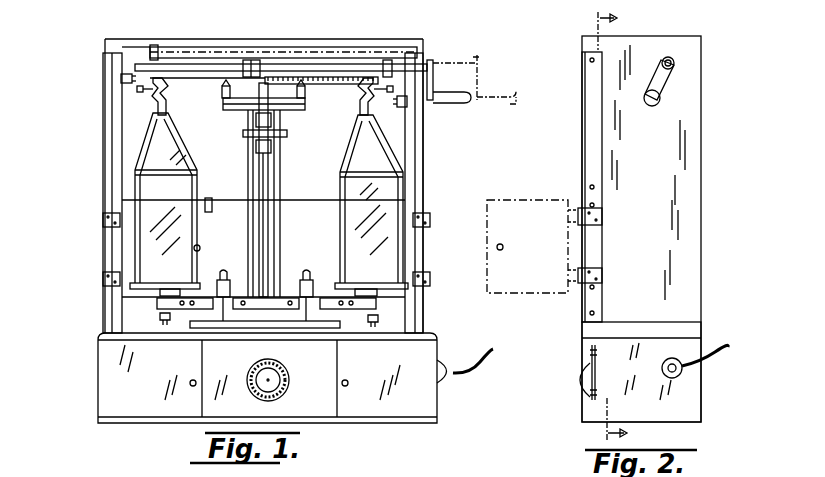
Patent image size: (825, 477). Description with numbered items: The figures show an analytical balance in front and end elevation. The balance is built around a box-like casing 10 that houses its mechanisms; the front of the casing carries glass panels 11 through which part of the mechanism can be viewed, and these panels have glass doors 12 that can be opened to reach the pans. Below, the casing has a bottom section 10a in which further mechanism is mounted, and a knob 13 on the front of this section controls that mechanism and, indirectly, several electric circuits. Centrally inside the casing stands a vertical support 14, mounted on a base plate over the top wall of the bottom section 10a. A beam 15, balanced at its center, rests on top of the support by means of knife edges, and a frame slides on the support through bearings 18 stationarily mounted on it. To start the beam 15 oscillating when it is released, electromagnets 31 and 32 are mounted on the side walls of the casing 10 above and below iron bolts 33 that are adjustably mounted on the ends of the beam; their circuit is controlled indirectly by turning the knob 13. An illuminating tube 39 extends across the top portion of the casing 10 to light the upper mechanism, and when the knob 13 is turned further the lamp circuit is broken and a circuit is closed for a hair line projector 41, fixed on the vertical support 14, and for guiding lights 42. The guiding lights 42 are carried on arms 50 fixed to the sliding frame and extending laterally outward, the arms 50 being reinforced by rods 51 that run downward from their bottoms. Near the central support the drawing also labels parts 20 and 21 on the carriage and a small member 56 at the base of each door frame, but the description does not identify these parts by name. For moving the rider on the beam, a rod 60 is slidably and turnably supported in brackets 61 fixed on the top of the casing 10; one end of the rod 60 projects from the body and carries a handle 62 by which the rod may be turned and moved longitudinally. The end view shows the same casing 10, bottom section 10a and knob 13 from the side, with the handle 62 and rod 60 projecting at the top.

In FIG. 1, the casing 10 is at (107, 165).
In FIG. 2, the casing 10 is at (637, 228).
In FIG. 1, the bottom section 10a is at (112, 383).
In FIG. 2, the bottom section 10a is at (698, 400).
In FIG. 1, the glass panels 11 is at (125, 128).
In FIG. 2, the glass panels 11 is at (590, 187).
In FIG. 1, the glass doors 12 is at (143, 240).
In FIG. 2, the glass doors 12 is at (520, 293).
In FIG. 1, the knob 13 is at (283, 392).
In FIG. 2, the knob 13 is at (578, 382).
In FIG. 1, the vertical support 14 is at (275, 192).
In FIG. 1, the beam 15 is at (199, 92).
In FIG. 1, the bearings 18 is at (243, 137).
In FIG. 1, the guide post 20 is at (225, 103).
In FIG. 1, the scale bracket 21 is at (307, 95).
In FIG. 1, the electromagnet 31 is at (122, 78).
In FIG. 1, the electromagnet 32 is at (407, 110).
In FIG. 1, the iron bolts 33 is at (140, 90).
In FIG. 1, the illuminating tube 39 is at (197, 47).
In FIG. 1, the hair line projector 41 is at (200, 245).
In FIG. 1, the guiding lights 42 is at (224, 273).
In FIG. 1, the arms 50 is at (190, 310).
In FIG. 1, the rods 51 is at (233, 320).
In FIG. 1, the clip 56 is at (160, 318).
In FIG. 1, the rod 60 is at (318, 63).
In FIG. 2, the rod 60 is at (672, 65).
In FIG. 1, the brackets 61 is at (247, 58).
In FIG. 1, the handle 62 is at (465, 103).
In FIG. 2, the handle 62 is at (665, 83).